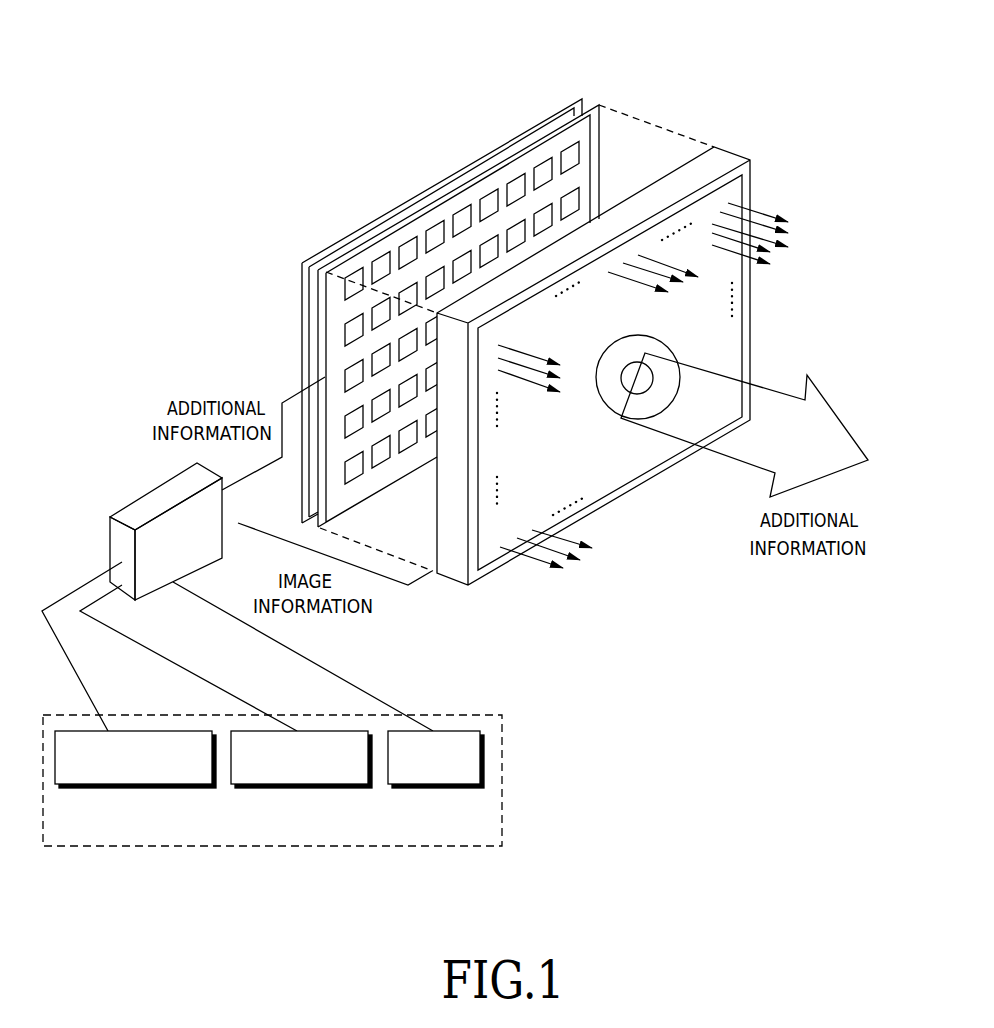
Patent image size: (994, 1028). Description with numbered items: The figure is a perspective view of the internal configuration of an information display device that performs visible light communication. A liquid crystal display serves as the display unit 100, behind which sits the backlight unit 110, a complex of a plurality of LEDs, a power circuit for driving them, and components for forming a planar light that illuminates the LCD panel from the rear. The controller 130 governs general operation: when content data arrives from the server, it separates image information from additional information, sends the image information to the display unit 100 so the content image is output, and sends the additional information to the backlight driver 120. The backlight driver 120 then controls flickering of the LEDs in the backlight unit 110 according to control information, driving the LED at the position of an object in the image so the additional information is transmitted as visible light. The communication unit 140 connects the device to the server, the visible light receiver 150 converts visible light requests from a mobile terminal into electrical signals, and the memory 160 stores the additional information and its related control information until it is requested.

The display unit 100 is at (492, 578).
The backlight unit 110 is at (710, 75).
The backlight driver 120 is at (405, 52).
The controller 130 is at (151, 489).
The communication unit 140 is at (140, 790).
The visible light receiver 150 is at (300, 790).
The memory 160 is at (439, 790).